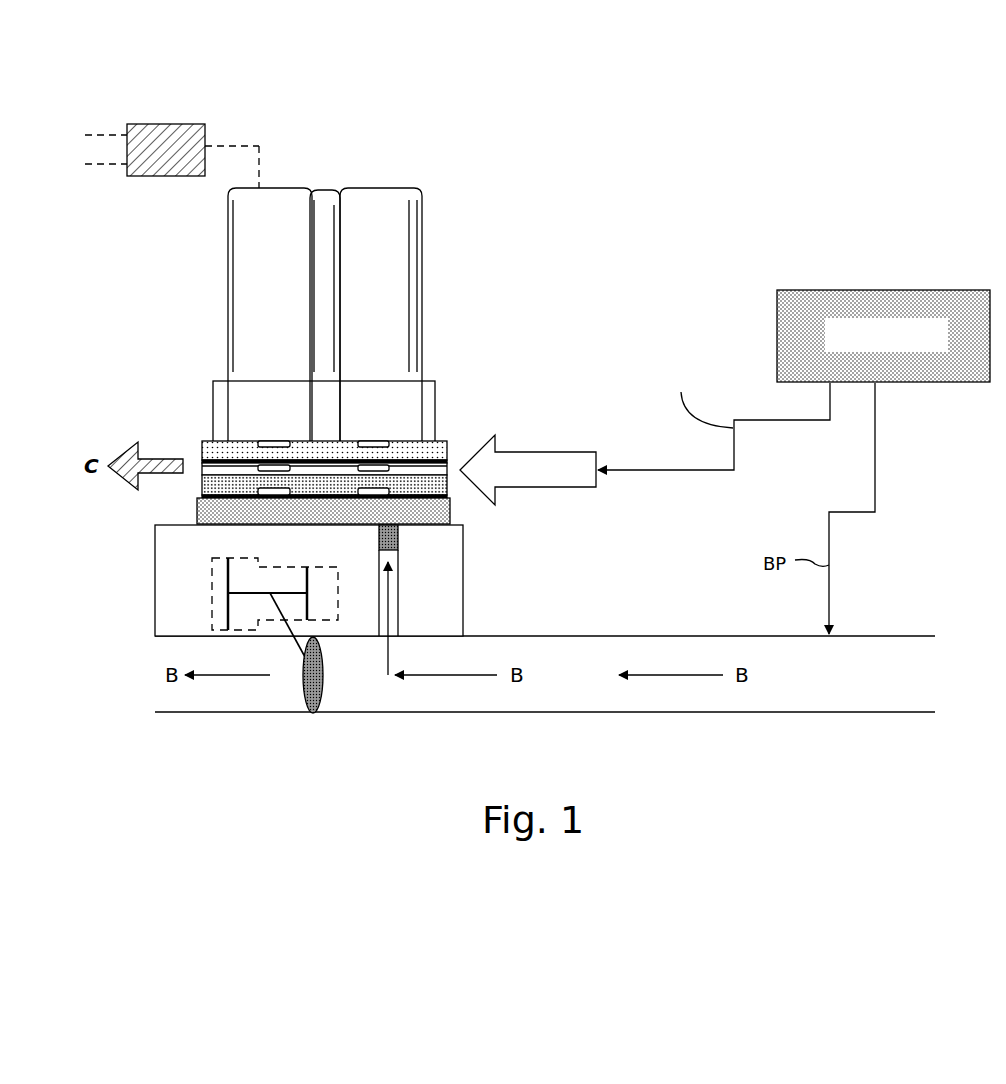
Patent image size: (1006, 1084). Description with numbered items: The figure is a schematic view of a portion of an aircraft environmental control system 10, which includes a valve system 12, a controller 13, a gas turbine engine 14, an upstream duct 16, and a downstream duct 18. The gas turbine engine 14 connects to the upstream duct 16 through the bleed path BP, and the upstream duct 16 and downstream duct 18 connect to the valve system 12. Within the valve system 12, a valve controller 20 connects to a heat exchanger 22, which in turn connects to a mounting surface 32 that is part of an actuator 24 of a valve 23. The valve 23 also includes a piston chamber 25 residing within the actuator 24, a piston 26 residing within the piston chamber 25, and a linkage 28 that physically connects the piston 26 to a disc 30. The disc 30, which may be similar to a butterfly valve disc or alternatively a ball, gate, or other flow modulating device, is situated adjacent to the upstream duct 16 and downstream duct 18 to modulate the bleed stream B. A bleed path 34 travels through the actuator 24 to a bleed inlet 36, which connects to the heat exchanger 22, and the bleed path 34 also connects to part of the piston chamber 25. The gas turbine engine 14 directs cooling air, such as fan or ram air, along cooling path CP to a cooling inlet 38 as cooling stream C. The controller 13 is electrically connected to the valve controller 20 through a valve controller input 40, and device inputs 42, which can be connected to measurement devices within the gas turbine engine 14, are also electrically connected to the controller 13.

The aircraft environmental control system 10 is at (868, 195).
The valve system 12 is at (513, 228).
The controller 13 is at (172, 124).
The gas turbine engine 14 is at (870, 290).
The upstream duct 16 is at (620, 650).
The downstream duct 18 is at (220, 700).
The valve controller 20 is at (250, 300).
The heat exchanger 22 is at (207, 440).
The valve 23 is at (244, 558).
The actuator 24 is at (173, 548).
The piston chamber 25 is at (215, 575).
The piston 26 is at (220, 605).
The linkage 28 is at (296, 650).
The disc 30 is at (322, 690).
The mounting surface 32 is at (212, 512).
The bleed path 34 is at (398, 590).
The bleed inlet 36 is at (398, 540).
The cooling inlet 38 is at (447, 448).
The valve controller input 40 is at (260, 155).
The device inputs 42 is at (100, 133).